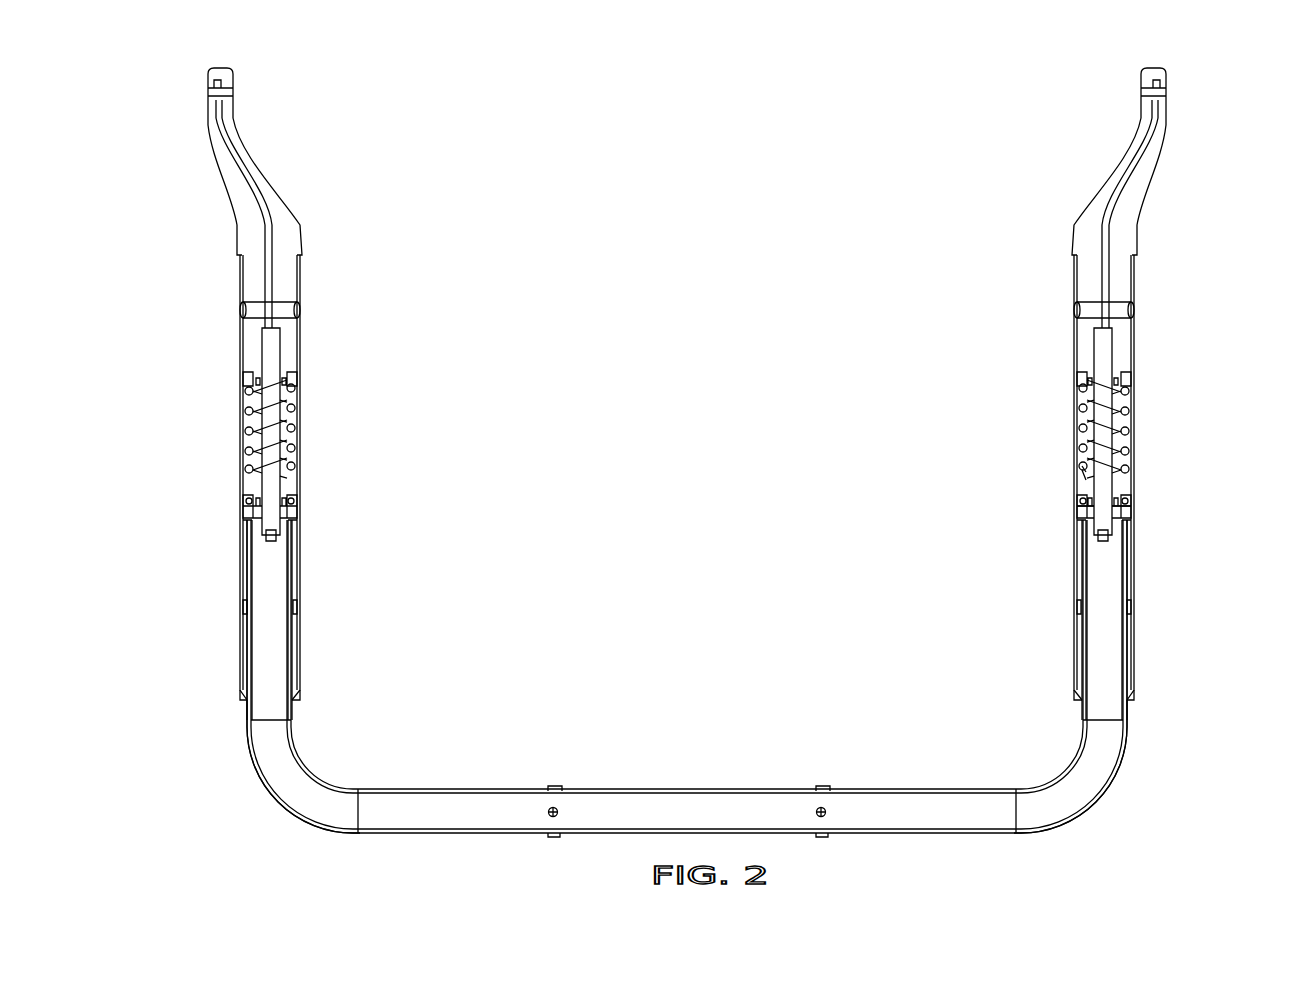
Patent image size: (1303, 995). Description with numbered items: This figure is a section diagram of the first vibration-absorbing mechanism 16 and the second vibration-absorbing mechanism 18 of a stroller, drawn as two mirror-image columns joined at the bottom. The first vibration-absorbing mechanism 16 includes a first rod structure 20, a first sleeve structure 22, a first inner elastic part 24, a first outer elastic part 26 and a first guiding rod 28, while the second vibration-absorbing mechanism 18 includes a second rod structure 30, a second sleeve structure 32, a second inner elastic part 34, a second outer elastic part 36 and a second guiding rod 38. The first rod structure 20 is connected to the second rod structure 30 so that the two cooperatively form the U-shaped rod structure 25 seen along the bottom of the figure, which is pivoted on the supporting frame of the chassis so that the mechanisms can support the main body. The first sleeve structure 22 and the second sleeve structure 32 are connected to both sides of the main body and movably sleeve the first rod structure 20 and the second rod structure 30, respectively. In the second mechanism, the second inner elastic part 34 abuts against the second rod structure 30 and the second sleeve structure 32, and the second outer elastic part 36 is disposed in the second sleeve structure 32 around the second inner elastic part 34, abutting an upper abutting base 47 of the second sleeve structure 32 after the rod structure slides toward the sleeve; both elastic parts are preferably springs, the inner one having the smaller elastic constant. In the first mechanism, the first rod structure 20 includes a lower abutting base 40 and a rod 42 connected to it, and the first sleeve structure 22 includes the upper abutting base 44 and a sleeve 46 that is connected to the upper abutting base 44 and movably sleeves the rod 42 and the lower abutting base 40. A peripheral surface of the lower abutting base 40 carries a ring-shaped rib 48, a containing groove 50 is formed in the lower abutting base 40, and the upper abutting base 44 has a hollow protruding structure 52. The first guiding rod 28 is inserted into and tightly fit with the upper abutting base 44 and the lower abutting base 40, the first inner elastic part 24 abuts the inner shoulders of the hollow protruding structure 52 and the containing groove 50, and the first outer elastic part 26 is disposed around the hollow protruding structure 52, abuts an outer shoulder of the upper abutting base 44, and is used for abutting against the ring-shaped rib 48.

The first vibration-absorbing mechanism 16 is at (1044, 450).
The second vibration-absorbing mechanism 18 is at (333, 394).
The first rod structure 20 is at (1011, 655).
The first sleeve structure 22 is at (1030, 239).
The first inner elastic part 24 is at (1100, 452).
The U-shaped rod structure 25 is at (398, 840).
The first outer elastic part 26 is at (1083, 420).
The first guiding rod 28 is at (1082, 474).
The second rod structure 30 is at (305, 745).
The second sleeve structure 32 is at (303, 580).
The second inner elastic part 34 is at (293, 426).
The second outer elastic part 36 is at (294, 385).
The second guiding rod 38 is at (270, 356).
The lower abutting base 40 is at (1035, 513).
The rod 42 is at (1070, 745).
The upper abutting base 44 is at (1095, 232).
The sleeve 46 is at (1080, 398).
The upper abutting base 47 is at (258, 197).
The ring-shaped rib 48 is at (1078, 493).
The containing groove 50 is at (1078, 478).
The hollow protruding structure 52 is at (1138, 385).